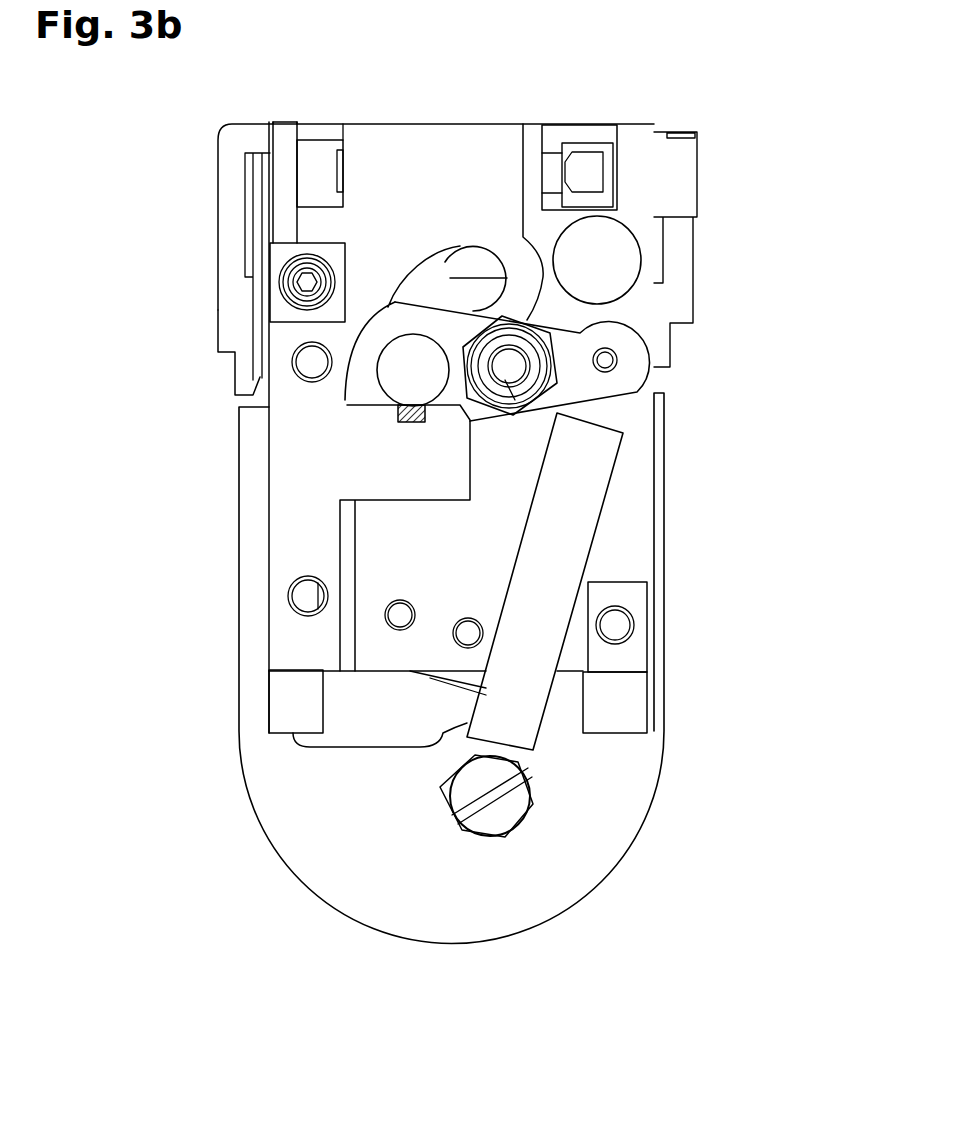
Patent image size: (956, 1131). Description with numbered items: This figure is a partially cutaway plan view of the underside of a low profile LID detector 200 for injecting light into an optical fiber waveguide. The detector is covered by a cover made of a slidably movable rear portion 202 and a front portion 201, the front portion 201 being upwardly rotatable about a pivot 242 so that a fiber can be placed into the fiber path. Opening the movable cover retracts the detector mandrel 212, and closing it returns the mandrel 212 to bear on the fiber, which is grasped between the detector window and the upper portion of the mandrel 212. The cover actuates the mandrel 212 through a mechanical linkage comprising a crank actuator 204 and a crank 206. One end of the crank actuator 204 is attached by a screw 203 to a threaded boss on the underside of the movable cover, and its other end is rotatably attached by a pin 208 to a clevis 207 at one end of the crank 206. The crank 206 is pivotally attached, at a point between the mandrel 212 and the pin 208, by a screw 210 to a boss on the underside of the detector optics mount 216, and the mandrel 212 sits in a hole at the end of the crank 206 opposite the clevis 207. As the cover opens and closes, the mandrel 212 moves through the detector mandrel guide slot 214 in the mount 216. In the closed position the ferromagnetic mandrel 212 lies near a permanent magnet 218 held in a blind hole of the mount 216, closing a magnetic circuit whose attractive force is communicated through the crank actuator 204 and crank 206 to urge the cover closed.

The low profile LID detector 200 is at (190, 658).
The front portion 201 is at (222, 279).
The rear portion 202 is at (612, 858).
The screw 203 is at (513, 813).
The crank actuator 204 is at (520, 690).
The crank 206 is at (580, 335).
The clevis 207 is at (627, 362).
The pin 208 is at (612, 363).
The screw 210 is at (510, 390).
The detector mandrel 212 is at (397, 382).
The detector mandrel guide slot 214 is at (450, 270).
The detector optics mount 216 is at (313, 548).
The magnet 218 is at (400, 422).
The pivot 242 is at (590, 173).